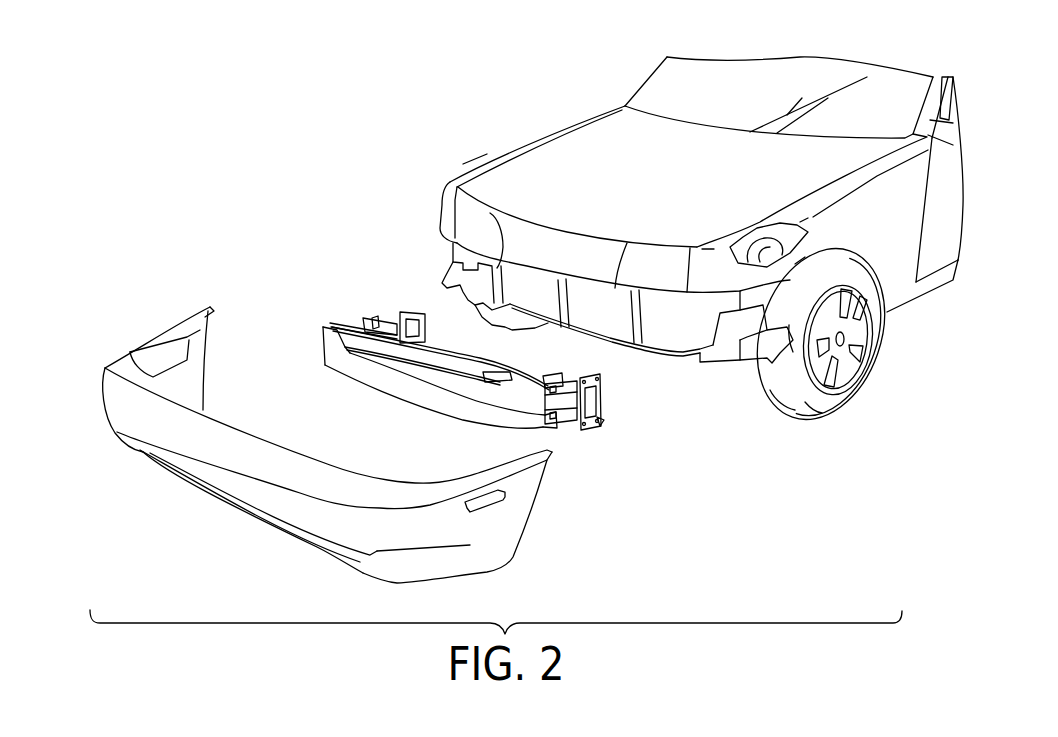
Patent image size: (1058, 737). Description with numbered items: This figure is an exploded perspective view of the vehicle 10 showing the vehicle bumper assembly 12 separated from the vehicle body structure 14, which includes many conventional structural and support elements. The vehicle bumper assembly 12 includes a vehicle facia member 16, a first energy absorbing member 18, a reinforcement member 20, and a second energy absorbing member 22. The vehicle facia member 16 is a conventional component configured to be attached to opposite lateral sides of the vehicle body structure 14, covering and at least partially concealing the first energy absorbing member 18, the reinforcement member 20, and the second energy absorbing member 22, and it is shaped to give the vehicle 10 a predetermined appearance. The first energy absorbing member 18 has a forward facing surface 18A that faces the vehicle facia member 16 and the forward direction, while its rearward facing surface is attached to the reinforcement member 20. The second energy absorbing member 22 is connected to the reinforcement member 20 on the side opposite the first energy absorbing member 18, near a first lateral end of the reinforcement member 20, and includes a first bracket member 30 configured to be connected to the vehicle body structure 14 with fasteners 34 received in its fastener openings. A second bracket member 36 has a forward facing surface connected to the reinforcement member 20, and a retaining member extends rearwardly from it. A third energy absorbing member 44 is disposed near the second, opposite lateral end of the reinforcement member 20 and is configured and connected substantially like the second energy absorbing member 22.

The vehicle 10 is at (688, 227).
The vehicle bumper assembly 12 is at (353, 413).
The vehicle body structure 14 is at (490, 143).
The vehicle facia member 16 is at (120, 432).
The first energy absorbing member 18 is at (440, 397).
The forward facing surface 18A is at (367, 373).
The reinforcement member 20 is at (463, 367).
The second energy absorbing member 22 is at (575, 431).
The first bracket member 30 is at (600, 398).
The fasteners 34 is at (602, 425).
The second bracket member 36 is at (547, 378).
The third energy absorbing member 44 is at (392, 303).